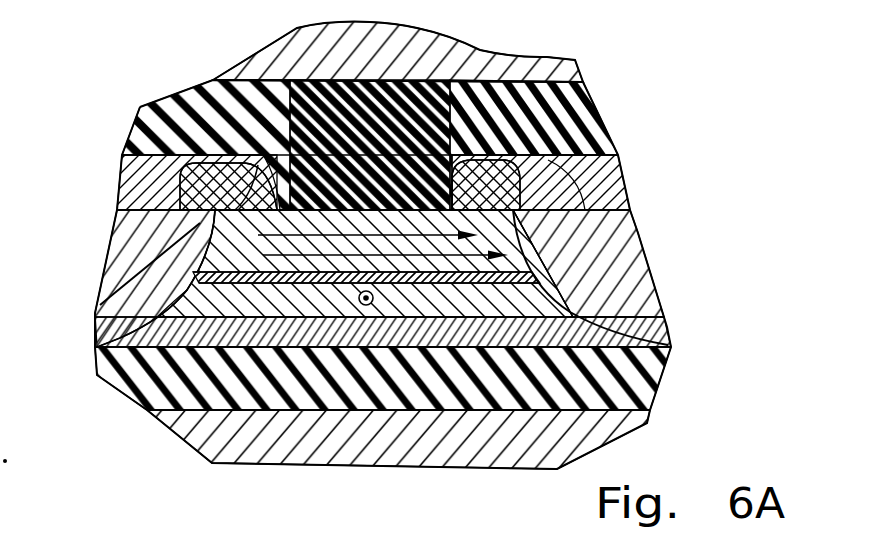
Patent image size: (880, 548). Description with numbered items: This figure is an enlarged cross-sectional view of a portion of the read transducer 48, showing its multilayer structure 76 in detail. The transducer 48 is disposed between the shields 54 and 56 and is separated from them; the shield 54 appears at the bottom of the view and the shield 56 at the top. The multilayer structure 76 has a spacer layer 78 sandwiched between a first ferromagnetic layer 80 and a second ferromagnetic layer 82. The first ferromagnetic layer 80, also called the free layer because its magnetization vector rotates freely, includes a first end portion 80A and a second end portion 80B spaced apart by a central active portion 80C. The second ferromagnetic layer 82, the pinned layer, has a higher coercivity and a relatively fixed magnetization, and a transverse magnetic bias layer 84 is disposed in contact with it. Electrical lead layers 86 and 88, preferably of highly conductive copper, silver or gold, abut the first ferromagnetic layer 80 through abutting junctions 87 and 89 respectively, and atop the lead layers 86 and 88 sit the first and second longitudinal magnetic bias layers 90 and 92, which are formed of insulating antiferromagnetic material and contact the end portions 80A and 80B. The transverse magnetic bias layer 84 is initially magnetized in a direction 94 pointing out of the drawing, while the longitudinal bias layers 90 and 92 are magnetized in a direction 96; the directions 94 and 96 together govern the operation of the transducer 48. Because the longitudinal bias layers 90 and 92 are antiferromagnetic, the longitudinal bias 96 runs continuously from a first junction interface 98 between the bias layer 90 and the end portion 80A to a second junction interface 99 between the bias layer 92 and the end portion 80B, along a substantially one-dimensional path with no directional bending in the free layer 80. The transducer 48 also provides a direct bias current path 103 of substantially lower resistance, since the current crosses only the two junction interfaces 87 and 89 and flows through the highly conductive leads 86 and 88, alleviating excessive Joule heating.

The read transducer 48 is at (78, 52).
The shield 54 is at (347, 462).
The shield 56 is at (257, 57).
The multilayer structure 76 is at (428, 360).
The spacer layer 78 is at (530, 278).
The first ferromagnetic layer 80 is at (233, 247).
The first end portion 80A is at (247, 180).
The second end portion 80B is at (520, 168).
The central active portion 80C is at (380, 207).
The second ferromagnetic layer 82 is at (190, 300).
The transverse magnetic bias layer 84 is at (338, 341).
The electrical lead layer 86 is at (113, 252).
The abutting junction 87 is at (203, 147).
The electrical lead layer 88 is at (617, 240).
The abutting junction 89 is at (555, 200).
The first longitudinal magnetic bias layer 90 is at (117, 173).
The second longitudinal magnetic bias layer 92 is at (625, 180).
The magnetization direction 94 is at (373, 298).
The longitudinal magnetic bias direction 96 is at (335, 225).
The first junction interface 98 is at (300, 157).
The second junction interface 99 is at (440, 150).
The bias current path 103 is at (305, 283).